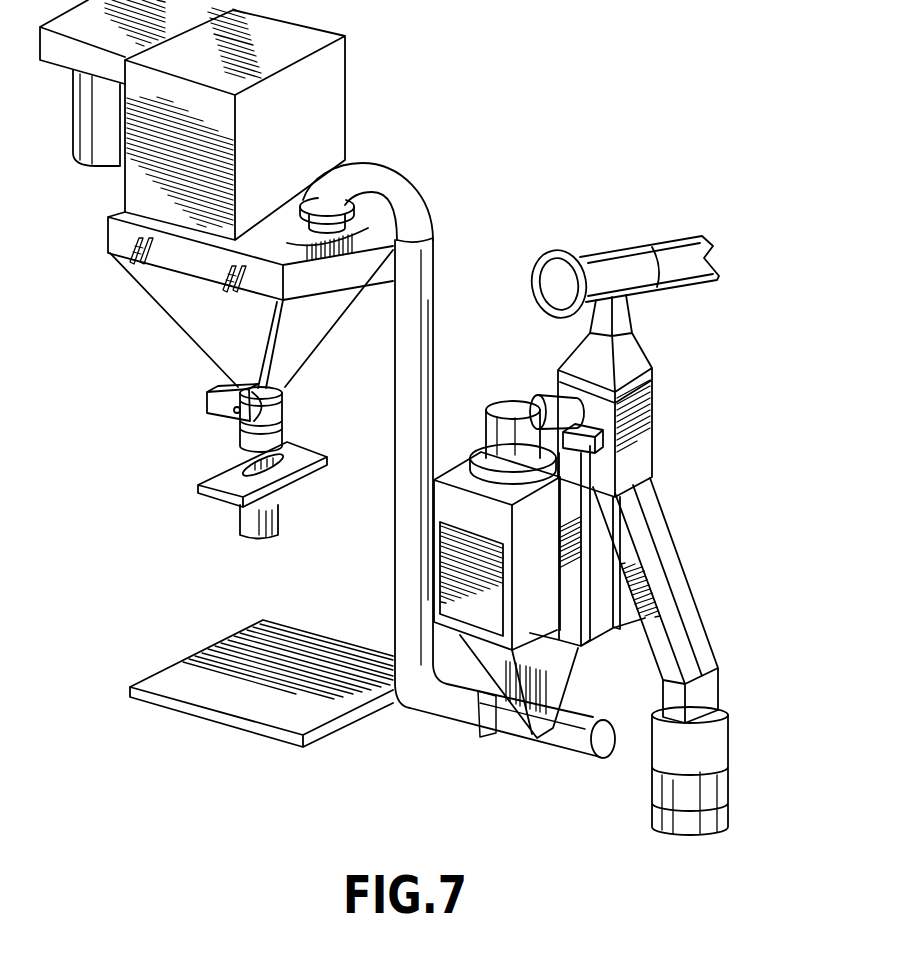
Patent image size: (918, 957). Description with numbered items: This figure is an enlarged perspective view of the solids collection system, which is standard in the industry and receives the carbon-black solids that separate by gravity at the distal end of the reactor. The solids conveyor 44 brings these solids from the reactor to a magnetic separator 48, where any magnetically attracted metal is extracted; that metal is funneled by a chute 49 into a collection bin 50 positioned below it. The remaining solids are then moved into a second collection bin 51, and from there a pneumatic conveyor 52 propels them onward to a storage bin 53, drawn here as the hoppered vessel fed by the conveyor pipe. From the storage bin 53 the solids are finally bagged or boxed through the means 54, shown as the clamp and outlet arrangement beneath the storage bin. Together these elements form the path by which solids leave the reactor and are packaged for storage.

The solids conveyor 44 is at (672, 254).
The magnetic separator 48 is at (656, 404).
The chute 49 is at (678, 577).
The collection bin 50 is at (713, 748).
The collection bin 51 is at (522, 596).
The pneumatic conveyor 52 is at (396, 515).
The storage bin 53 is at (385, 203).
The bagging or boxing means 54 is at (178, 370).